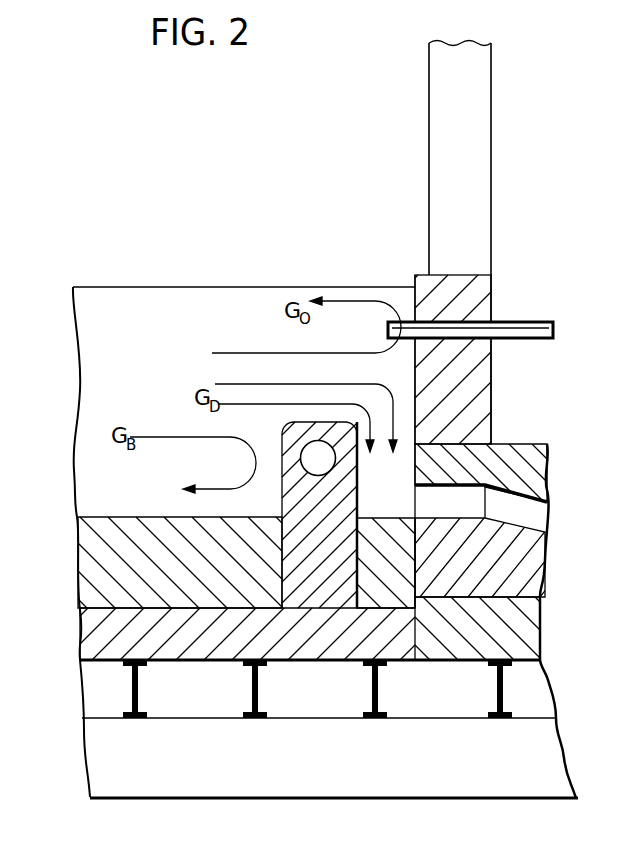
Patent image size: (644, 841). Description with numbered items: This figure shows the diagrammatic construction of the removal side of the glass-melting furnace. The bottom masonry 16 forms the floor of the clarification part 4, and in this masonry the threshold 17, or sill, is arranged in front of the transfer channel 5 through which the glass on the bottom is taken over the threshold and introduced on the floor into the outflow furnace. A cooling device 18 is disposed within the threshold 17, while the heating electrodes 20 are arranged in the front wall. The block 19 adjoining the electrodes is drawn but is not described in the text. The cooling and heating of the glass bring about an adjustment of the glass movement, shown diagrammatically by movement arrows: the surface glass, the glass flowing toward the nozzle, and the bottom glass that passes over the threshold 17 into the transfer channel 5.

The clarification part 4 is at (131, 308).
The conveyor channel 5 is at (470, 496).
The bottom masonry 16 is at (100, 560).
The threshold 17 is at (316, 575).
The cooling device 18 is at (325, 462).
The nozzle block 19 is at (475, 380).
The heating electrodes 20 is at (527, 320).